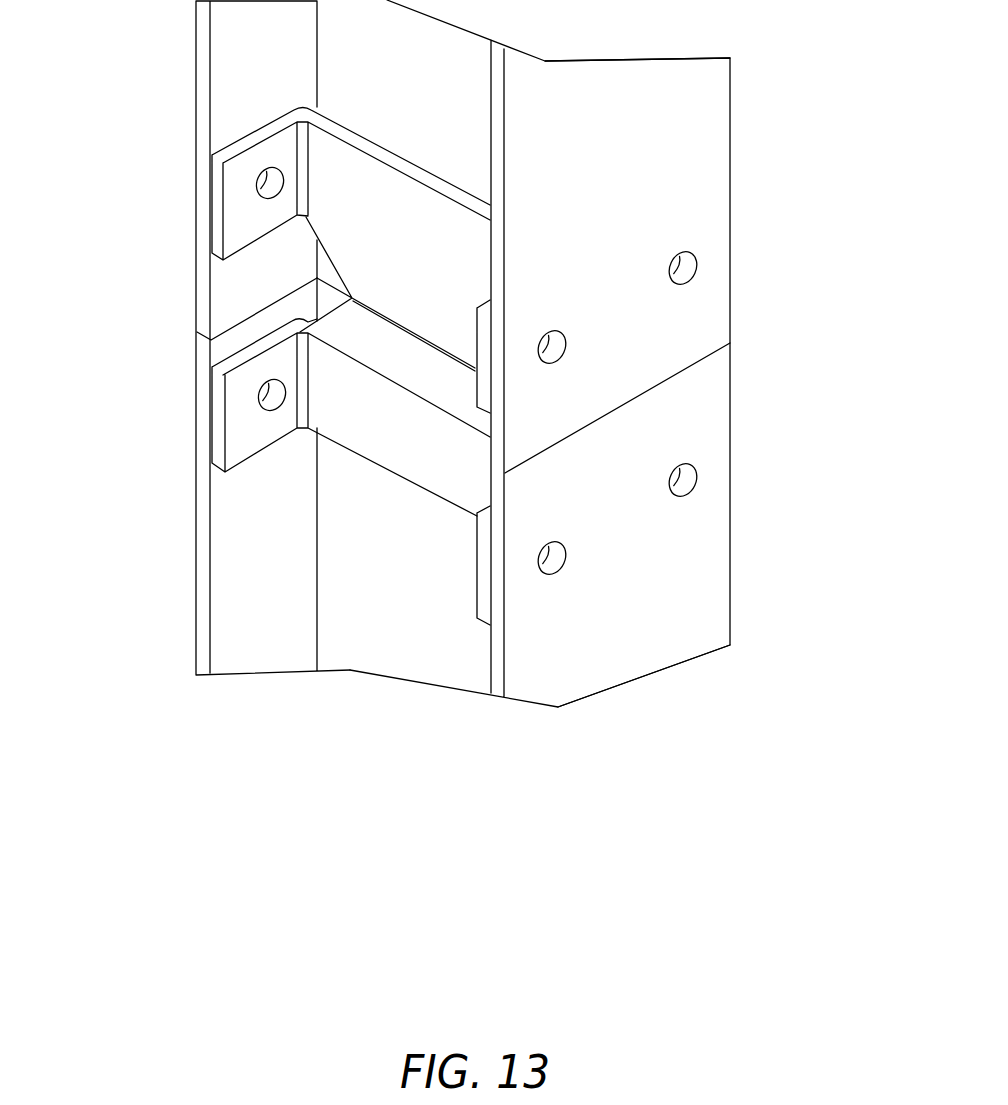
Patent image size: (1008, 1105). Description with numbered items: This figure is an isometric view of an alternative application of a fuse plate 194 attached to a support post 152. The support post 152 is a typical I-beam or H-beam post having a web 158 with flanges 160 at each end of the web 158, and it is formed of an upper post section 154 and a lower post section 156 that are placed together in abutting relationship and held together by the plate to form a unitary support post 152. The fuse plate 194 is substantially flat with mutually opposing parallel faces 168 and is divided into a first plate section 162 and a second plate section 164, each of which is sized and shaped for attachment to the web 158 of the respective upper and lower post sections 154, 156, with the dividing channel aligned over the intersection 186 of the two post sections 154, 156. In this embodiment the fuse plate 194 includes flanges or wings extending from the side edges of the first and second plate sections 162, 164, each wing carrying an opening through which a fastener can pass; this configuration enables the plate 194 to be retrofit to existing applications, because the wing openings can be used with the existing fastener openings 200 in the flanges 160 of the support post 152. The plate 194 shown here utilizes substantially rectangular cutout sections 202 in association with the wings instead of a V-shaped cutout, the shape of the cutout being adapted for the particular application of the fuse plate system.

The support post 152 is at (707, 112).
The upper post section 154 is at (700, 180).
The lower post section 156 is at (703, 602).
The web 158 is at (370, 68).
The flanges 160 is at (263, 89).
The first plate section 162 is at (362, 187).
The second plate section 164 is at (367, 430).
The mutually opposing parallel faces 168 is at (433, 252).
The intersection 186 is at (686, 384).
The fuse plate 194 is at (165, 403).
The fastener openings 200 is at (703, 285).
The rectangular cutout sections 202 is at (240, 306).